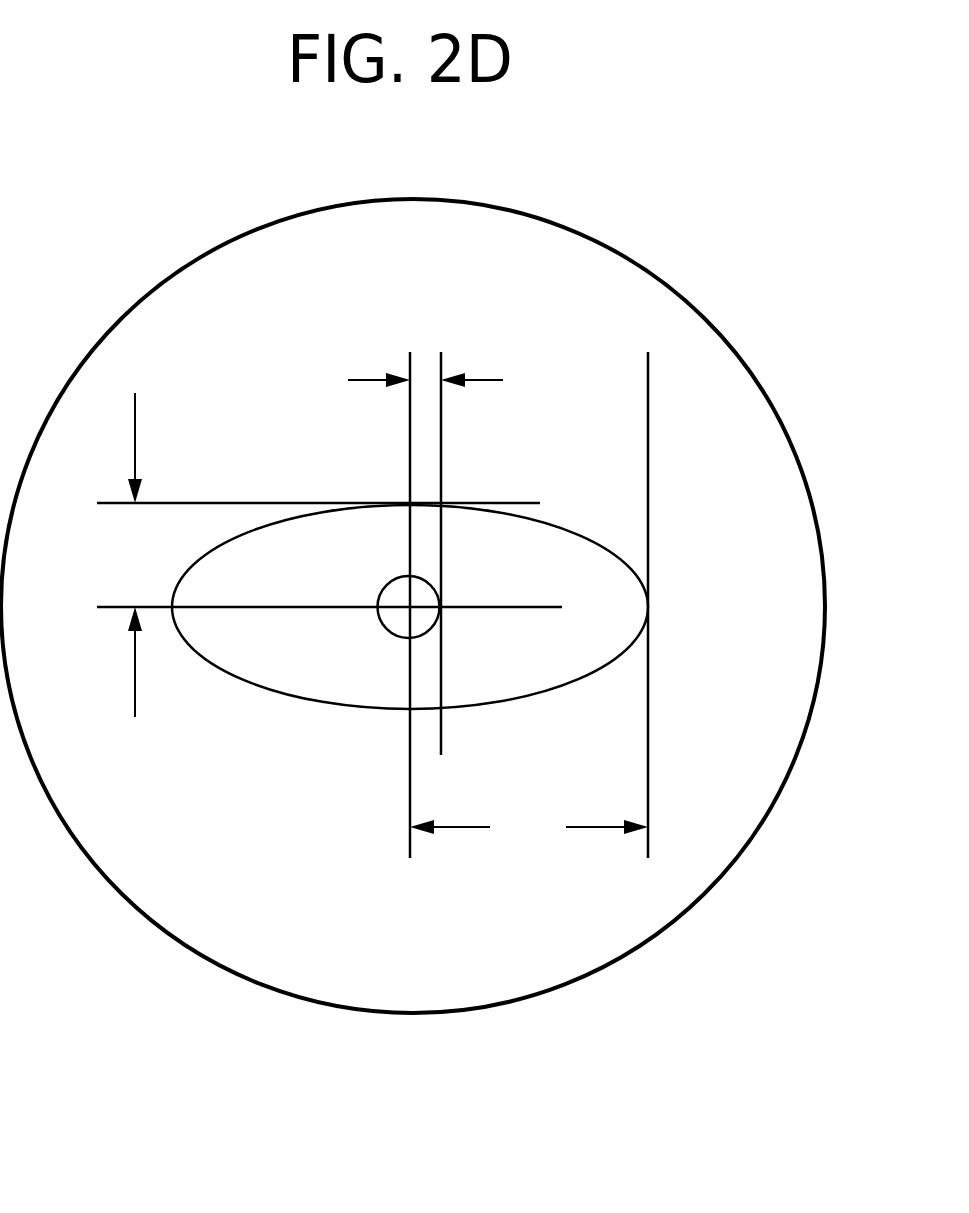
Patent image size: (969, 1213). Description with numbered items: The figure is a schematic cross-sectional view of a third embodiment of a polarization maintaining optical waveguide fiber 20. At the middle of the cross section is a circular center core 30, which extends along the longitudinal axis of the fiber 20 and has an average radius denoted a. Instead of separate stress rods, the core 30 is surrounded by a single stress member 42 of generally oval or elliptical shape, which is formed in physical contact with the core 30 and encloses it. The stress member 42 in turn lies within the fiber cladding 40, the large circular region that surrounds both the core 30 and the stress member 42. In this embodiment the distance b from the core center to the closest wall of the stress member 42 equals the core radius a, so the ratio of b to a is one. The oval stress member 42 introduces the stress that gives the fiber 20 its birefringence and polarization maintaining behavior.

The optical waveguide fiber 20 is at (765, 245).
The fiber cladding 40 is at (600, 273).
The stress member 42 is at (565, 553).
The center core 30 is at (380, 628).